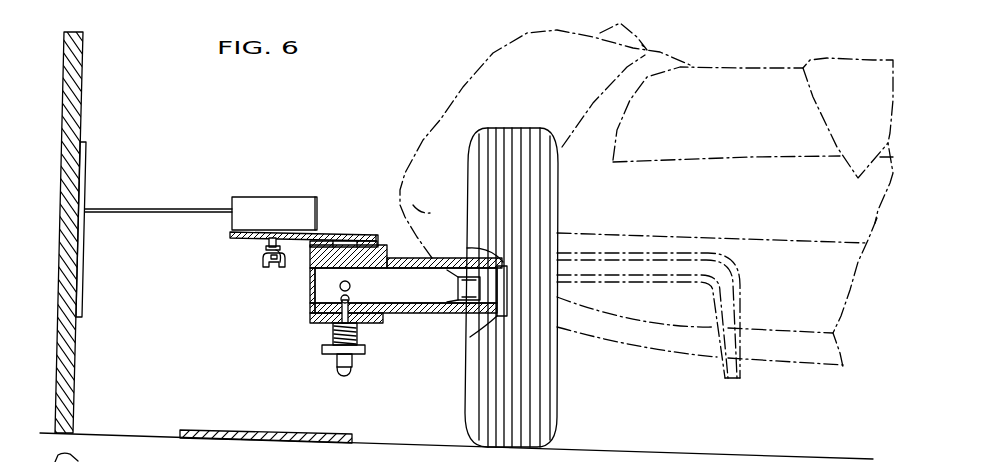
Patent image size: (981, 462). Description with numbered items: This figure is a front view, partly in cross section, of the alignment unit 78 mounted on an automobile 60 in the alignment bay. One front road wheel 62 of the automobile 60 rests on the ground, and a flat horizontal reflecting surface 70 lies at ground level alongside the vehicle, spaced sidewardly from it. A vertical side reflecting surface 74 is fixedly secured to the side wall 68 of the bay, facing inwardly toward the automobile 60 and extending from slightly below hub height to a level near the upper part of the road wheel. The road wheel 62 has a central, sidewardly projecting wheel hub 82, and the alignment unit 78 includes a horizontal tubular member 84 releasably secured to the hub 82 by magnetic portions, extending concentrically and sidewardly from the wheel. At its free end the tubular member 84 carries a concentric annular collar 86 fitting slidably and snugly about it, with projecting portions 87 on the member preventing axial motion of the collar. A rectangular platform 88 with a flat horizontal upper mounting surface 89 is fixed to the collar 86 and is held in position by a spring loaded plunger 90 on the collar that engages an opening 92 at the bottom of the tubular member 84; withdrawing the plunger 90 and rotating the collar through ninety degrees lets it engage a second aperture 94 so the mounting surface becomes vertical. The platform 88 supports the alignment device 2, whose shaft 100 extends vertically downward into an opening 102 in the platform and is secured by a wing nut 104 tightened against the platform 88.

The alignment device 2 is at (243, 194).
The automobile 60 is at (492, 87).
The front road wheel 62 is at (557, 392).
The side wall 68 is at (75, 82).
The reflecting surface 70 is at (192, 430).
The side reflecting surface 74 is at (87, 170).
The alignment unit 78 is at (310, 185).
The wheel hub 82 is at (492, 277).
The tubular member 84 is at (405, 262).
The annular collar 86 is at (317, 330).
The projecting portions 87 is at (312, 320).
The platform 88 is at (352, 241).
The upper mounting surface 89 is at (347, 243).
The spring loaded plunger 90 is at (340, 347).
The opening 92 is at (397, 313).
The second aperture 94 is at (352, 287).
The shaft 100 is at (265, 239).
The opening 102 is at (290, 250).
The wing nut 104 is at (262, 262).